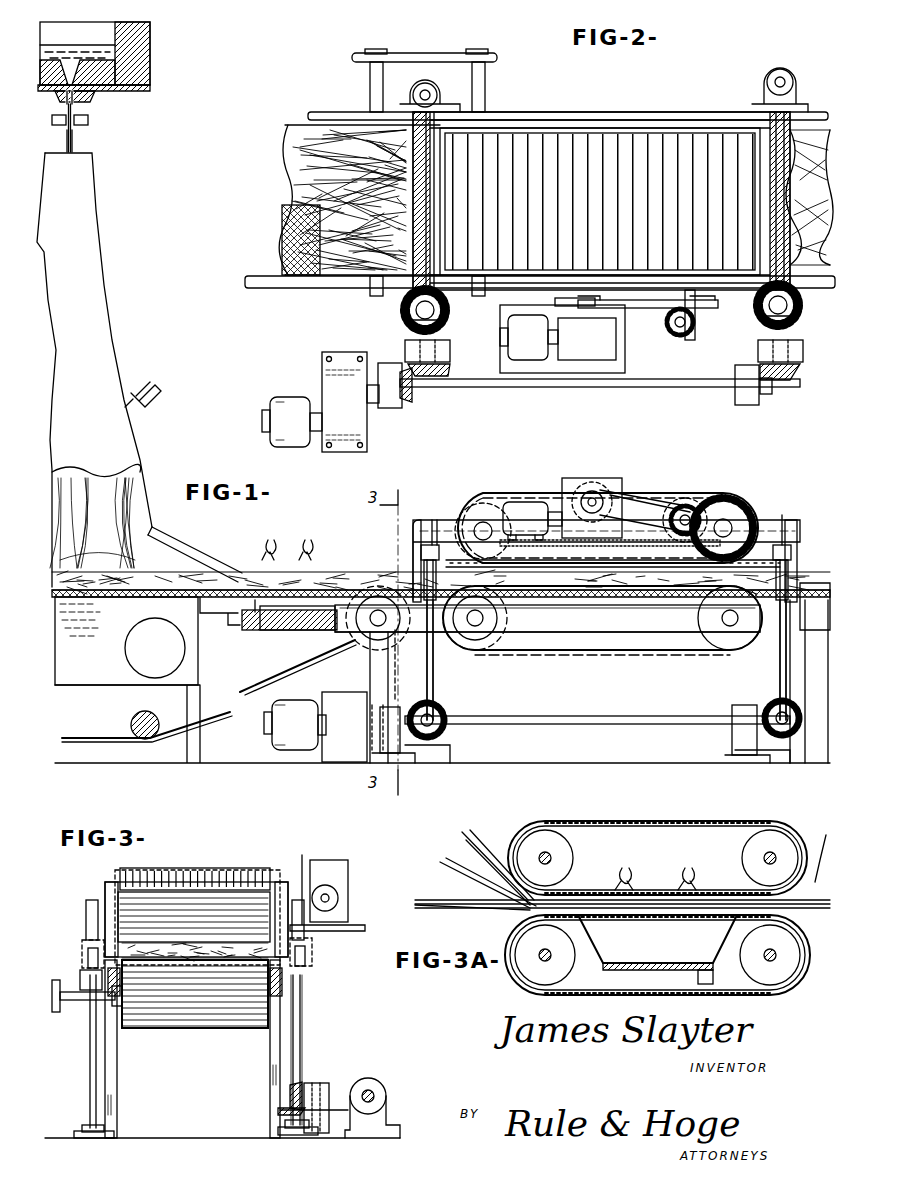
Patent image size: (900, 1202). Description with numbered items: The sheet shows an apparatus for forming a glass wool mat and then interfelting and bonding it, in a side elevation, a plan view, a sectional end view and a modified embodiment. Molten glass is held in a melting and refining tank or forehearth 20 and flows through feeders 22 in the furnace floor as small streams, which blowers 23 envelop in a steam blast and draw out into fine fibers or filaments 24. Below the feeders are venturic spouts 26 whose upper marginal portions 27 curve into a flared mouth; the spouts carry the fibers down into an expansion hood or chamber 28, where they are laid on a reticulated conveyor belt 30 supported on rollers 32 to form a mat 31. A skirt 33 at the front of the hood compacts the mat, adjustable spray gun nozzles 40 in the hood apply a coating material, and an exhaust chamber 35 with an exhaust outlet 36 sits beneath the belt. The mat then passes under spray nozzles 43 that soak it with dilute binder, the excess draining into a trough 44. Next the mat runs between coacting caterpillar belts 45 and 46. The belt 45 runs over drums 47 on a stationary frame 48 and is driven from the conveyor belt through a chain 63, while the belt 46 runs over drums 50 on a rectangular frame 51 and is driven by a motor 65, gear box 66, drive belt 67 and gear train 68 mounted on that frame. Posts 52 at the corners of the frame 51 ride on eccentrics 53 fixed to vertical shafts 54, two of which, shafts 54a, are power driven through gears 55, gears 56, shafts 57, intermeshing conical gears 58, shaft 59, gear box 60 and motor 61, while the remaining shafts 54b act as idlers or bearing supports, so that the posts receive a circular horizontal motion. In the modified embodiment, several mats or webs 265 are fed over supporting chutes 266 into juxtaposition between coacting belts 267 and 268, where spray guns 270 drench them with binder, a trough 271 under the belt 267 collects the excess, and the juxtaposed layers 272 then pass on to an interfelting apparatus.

In FIG. 1, the glass melting and refining tank or forehearth 20 is at (140, 40).
In FIG. 1, the feeders 22 is at (92, 100).
In FIG. 1, the blowers 23 is at (88, 120).
In FIG. 1, the fibers or filaments 24 is at (72, 140).
In FIG. 1, the upper marginal portions 27 is at (74, 150).
In FIG. 1, the spouts 26 is at (95, 235).
In FIG. 1, the spray gun nozzles 40 is at (148, 400).
In FIG. 1, the expansion hood or chamber 28 is at (127, 460).
In FIG. 1, the mat 31 is at (185, 578).
In FIG. 2, the mat 31 is at (300, 178).
In FIG. 3, the mat 31 is at (195, 945).
In FIG. 1, the skirt 33 is at (232, 570).
In FIG. 1, the spray nozzles 43 is at (295, 520).
In FIG. 1, the reticulated conveyor belt 30 is at (150, 596).
In FIG. 2, the reticulated conveyor belt 30 is at (283, 215).
In FIG. 1, the exhaust chamber 35 is at (95, 668).
In FIG. 1, the exhaust outlet 36 is at (150, 676).
In FIG. 1, the rollers 32 is at (130, 722).
In FIG. 1, the trough 44 is at (265, 635).
In FIG. 1, the motor 61 is at (268, 745).
In FIG. 2, the motor 61 is at (272, 400).
In FIG. 1, the gear box 60 is at (350, 765).
In FIG. 2, the gear box 60 is at (367, 402).
In FIG. 1, the chain 63 is at (400, 660).
In FIG. 3, the chain 63 is at (56, 1012).
In FIG. 1, the caterpillar belt 45 is at (598, 606).
In FIG. 3, the caterpillar belt 45 is at (200, 1025).
In FIG. 1, the stationary frame 48 is at (640, 636).
In FIG. 2, the stationary frame 48 is at (345, 112).
In FIG. 3, the stationary frame 48 is at (115, 1040).
In FIG. 1, the drums 47 is at (478, 656).
In FIG. 1, the caterpillar belt 46 is at (506, 485).
In FIG. 2, the caterpillar belt 46 is at (660, 120).
In FIG. 3, the caterpillar belt 46 is at (240, 868).
In FIG. 1, the drums 50 is at (470, 500).
In FIG. 1, the rectangular frame 51 is at (440, 520).
In FIG. 2, the rectangular frame 51 is at (520, 112).
In FIG. 3, the rectangular frame 51 is at (190, 878).
In FIG. 1, the posts 52 is at (421, 553).
In FIG. 2, the posts 52 is at (440, 92).
In FIG. 3, the posts 52 is at (100, 897).
In FIG. 1, the eccentrics 53 is at (424, 550).
In FIG. 2, the eccentrics 53 is at (414, 90).
In FIG. 3, the eccentrics 53 is at (88, 940).
In FIG. 3, the screw shaft 54 is at (300, 1010).
In FIG. 1, the vertical shafts 54a is at (434, 690).
In FIG. 3, the vertical shafts 54a is at (302, 1032).
In FIG. 3, the vertical shafts 54b is at (86, 1085).
In FIG. 1, the gears 55 is at (445, 735).
In FIG. 2, the gears 55 is at (400, 308).
In FIG. 3, the gears 55 is at (285, 1105).
In FIG. 2, the gears 56 is at (448, 322).
In FIG. 3, the gears 56 is at (295, 1082).
In FIG. 2, the shafts 57 is at (450, 350).
In FIG. 3, the shafts 57 is at (316, 1082).
In FIG. 1, the conical gears 58 is at (415, 705).
In FIG. 2, the conical gears 58 is at (450, 372).
In FIG. 3, the conical gears 58 is at (375, 1080).
In FIG. 1, the shaft 59 is at (600, 727).
In FIG. 2, the shaft 59 is at (470, 387).
In FIG. 3, the shaft 59 is at (380, 1092).
In FIG. 1, the motor 65 is at (535, 503).
In FIG. 2, the motor 65 is at (528, 360).
In FIG. 3, the motor 65 is at (338, 898).
In FIG. 1, the gear box 66 is at (590, 478).
In FIG. 2, the gear box 66 is at (580, 360).
In FIG. 3, the gear box 66 is at (335, 860).
In FIG. 1, the drive belt 67 is at (625, 495).
In FIG. 2, the drive belt 67 is at (640, 312).
In FIG. 3, the drive belt 67 is at (302, 858).
In FIG. 1, the gear train 68 is at (688, 505).
In FIG. 2, the gear train 68 is at (682, 338).
In FIG. 3A, the mats or webs 265 is at (470, 840).
In FIG. 3A, the supporting means or chutes 266 is at (458, 895).
In FIG. 3A, the belt 267 is at (620, 918).
In FIG. 3A, the belt 268 is at (560, 822).
In FIG. 3A, the spray guns 270 is at (680, 850).
In FIG. 3A, the trough 271 is at (605, 968).
In FIG. 3A, the juxtaposed layers 272 is at (822, 830).